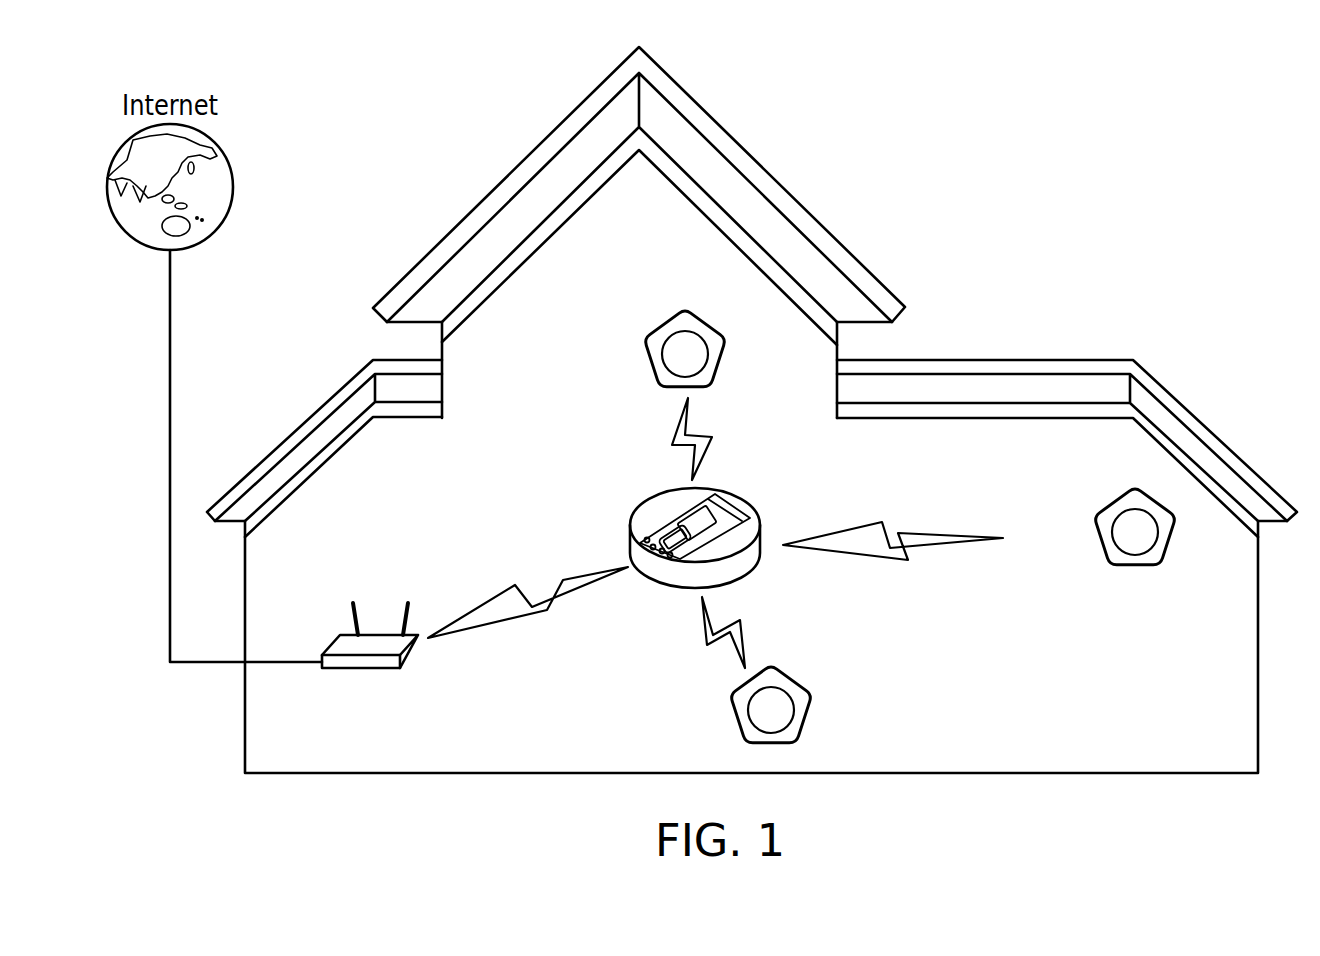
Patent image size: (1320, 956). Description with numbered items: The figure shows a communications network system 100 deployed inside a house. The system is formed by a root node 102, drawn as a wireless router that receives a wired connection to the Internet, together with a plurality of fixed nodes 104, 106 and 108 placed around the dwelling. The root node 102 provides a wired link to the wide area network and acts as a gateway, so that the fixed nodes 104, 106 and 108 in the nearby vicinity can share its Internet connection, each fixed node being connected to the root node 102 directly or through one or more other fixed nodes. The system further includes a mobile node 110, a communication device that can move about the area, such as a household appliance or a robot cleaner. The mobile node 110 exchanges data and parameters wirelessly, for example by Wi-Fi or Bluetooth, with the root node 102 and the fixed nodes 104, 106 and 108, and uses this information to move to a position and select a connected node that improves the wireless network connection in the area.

The communications network system 100 is at (1065, 143).
The root node 102 is at (362, 672).
The fixed node 104 is at (651, 362).
The fixed node 106 is at (1102, 542).
The fixed node 108 is at (738, 720).
The mobile node 110 is at (650, 510).